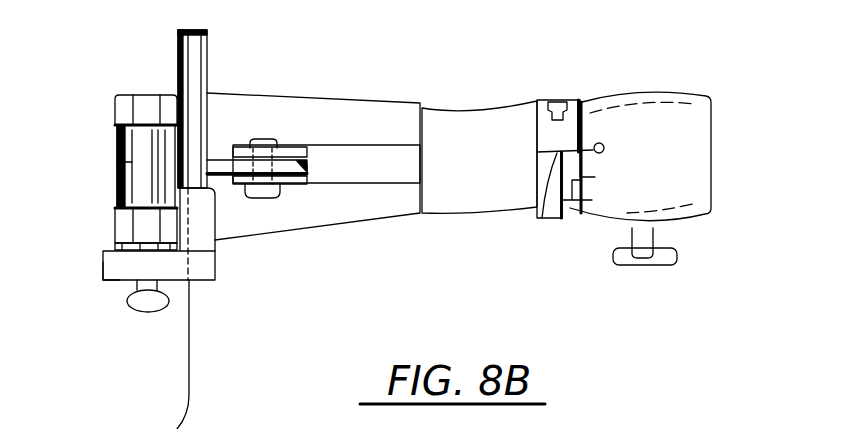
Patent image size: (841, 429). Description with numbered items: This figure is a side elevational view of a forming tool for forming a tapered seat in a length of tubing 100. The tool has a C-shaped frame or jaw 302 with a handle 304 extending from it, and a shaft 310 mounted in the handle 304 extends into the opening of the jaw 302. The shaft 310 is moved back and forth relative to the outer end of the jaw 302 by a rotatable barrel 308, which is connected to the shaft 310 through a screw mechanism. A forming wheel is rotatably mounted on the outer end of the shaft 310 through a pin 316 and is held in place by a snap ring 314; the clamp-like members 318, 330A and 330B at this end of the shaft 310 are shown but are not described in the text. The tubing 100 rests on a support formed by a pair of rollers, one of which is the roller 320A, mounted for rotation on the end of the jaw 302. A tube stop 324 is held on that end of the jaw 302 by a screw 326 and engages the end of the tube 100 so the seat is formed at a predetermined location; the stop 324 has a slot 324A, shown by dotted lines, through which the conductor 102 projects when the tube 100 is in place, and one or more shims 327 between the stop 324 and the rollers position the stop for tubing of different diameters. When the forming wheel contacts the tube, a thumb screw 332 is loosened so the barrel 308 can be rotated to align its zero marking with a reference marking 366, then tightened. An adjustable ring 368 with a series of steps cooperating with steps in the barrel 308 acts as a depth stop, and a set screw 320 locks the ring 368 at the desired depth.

The tubing 100 is at (208, 62).
The conductor 102 is at (186, 393).
The C-shaped frame or jaw 302 is at (368, 228).
The handle 304 is at (466, 108).
The rotatable barrel 308 is at (633, 87).
The shaft 310 is at (336, 145).
The snap ring 314 is at (268, 200).
The pin 316 is at (264, 140).
The strip 318 is at (208, 160).
The set screw 320 is at (560, 100).
The roller 320A is at (115, 160).
The tube stop 324 is at (188, 254).
The slot 324A is at (100, 280).
The screw 326 is at (140, 313).
The shim 327 is at (115, 245).
The upper clamp plate 330A is at (296, 147).
The lower clamp plate 330B is at (299, 186).
The thumb screw 332 is at (673, 255).
The reference marking 366 is at (540, 220).
The adjustable ring 368 is at (545, 100).